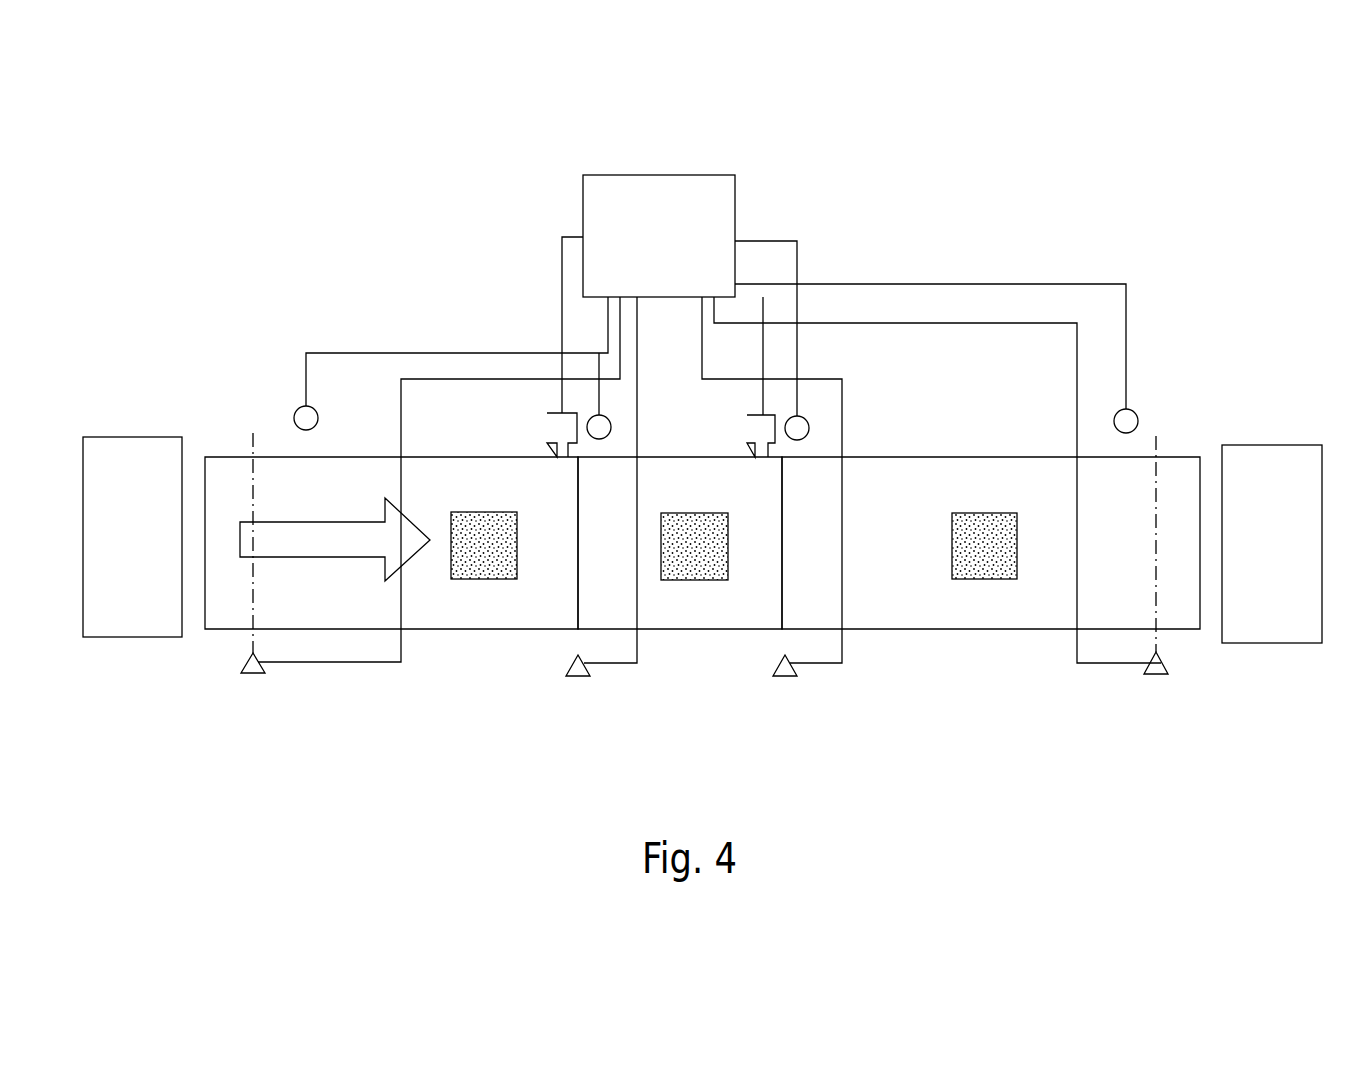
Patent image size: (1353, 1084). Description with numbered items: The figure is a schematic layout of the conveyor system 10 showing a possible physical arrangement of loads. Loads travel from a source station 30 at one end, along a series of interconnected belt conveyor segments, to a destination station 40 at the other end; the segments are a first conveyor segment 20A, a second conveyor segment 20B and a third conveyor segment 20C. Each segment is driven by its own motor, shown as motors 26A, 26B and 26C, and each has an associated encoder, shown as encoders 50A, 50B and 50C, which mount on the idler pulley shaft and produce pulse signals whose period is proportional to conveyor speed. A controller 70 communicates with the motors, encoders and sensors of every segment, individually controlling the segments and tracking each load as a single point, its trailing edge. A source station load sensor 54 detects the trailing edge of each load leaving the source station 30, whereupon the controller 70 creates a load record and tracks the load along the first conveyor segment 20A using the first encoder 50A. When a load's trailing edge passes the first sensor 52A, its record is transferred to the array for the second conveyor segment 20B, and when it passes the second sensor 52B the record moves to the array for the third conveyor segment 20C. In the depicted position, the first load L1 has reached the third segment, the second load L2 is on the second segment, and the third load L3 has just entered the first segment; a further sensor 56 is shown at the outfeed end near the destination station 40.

The conveyor system 10 is at (990, 175).
The controller 70 is at (735, 209).
The source station 30 is at (123, 637).
The destination station 40 is at (1274, 643).
The first conveyor segment 20A is at (477, 623).
The second conveyor segment 20B is at (692, 623).
The third conveyor segment 20C is at (1003, 619).
The motor 26A is at (547, 430).
The motor 26B is at (747, 437).
The motor 26C is at (1133, 411).
The first encoder 50A is at (297, 408).
The encoder 50B is at (611, 427).
The encoder 50C is at (810, 430).
The first sensor 52A is at (578, 677).
The second sensor 52B is at (785, 677).
The source station load sensor 54 is at (254, 674).
The outfeed drive 56 is at (1156, 675).
The first load L1 is at (952, 555).
The second load L2 is at (728, 565).
The third load L3 is at (517, 548).